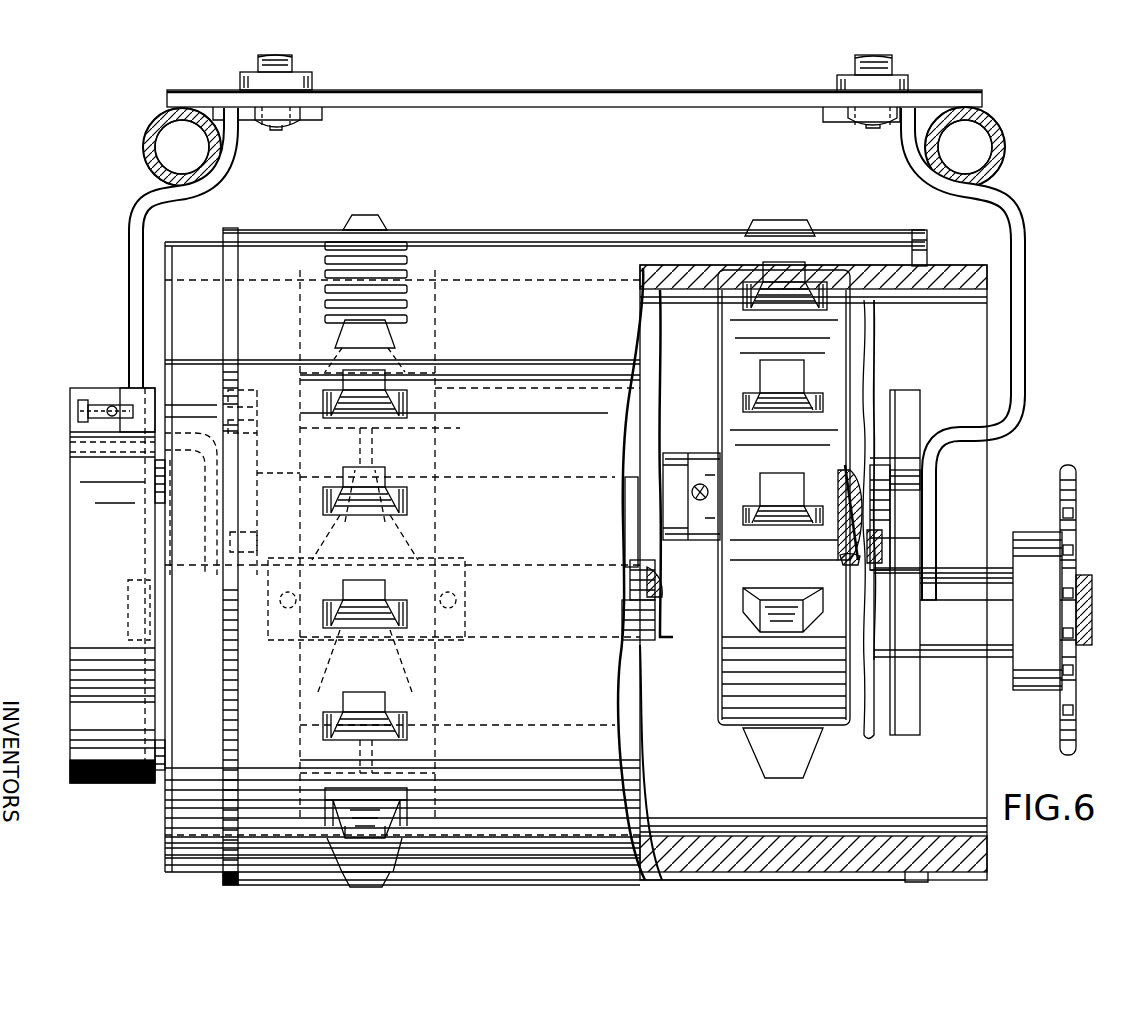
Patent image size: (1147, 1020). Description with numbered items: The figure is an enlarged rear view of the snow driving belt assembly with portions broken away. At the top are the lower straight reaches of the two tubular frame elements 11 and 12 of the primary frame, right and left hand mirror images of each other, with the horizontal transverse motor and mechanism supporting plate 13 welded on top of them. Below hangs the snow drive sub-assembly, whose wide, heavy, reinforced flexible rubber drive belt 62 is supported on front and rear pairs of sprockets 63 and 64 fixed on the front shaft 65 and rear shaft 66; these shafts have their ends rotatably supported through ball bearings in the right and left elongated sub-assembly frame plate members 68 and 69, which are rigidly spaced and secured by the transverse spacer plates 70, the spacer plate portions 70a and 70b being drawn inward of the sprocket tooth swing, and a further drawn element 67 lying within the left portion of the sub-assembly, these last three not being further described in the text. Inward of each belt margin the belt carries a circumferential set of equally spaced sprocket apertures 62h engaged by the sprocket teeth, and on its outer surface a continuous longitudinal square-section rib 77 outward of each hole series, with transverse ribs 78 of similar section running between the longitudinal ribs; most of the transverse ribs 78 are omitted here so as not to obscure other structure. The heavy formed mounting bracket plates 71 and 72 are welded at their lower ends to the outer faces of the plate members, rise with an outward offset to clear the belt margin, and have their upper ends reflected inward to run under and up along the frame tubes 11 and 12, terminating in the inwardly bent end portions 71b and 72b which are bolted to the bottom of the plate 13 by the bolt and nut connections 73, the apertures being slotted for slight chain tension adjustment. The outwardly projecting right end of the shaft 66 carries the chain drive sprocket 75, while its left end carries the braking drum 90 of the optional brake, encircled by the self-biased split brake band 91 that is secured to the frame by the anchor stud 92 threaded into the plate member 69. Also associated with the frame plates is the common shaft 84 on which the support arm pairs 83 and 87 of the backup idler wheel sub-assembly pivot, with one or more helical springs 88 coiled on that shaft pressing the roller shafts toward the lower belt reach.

The tubular frame element 11 is at (1003, 118).
The tubular frame element 12 is at (178, 90).
The motor and mechanism supporting plate 13 is at (570, 90).
The bolt and nut connections 73 is at (295, 70).
The mounting bracket plate 72 is at (130, 318).
The inwardly bent end portion 72b is at (320, 120).
The mounting bracket plate 71 is at (1024, 330).
The inwardly bent end portion 71b is at (828, 122).
The longitudinal rib 77 is at (236, 230).
The transverse rib 78 is at (520, 235).
The drive belt 62 is at (632, 228).
The sprocket apertures 62h is at (408, 292).
The front sprocket 63 is at (432, 356).
The rear sprocket 64 is at (430, 452).
The front shaft 65 is at (678, 455).
The rear shaft 66 is at (130, 592).
The adjusting member 67 is at (255, 548).
The right sub-assembly frame plate member 68 is at (916, 400).
The left sub-assembly frame plate member 69 is at (250, 396).
The transverse spacer plate 70 is at (402, 557).
The housing wall 70a is at (645, 412).
The housing wall 70b is at (632, 715).
The chain drive sprocket 75 is at (1074, 472).
The support arm pair 83 is at (885, 502).
The common shaft 84 is at (836, 490).
The support arm pair 87 is at (876, 520).
The helical spring 88 is at (840, 562).
The braking drum 90 is at (160, 764).
The split brake band 91 is at (76, 466).
The anchor pin or stud 92 is at (192, 398).